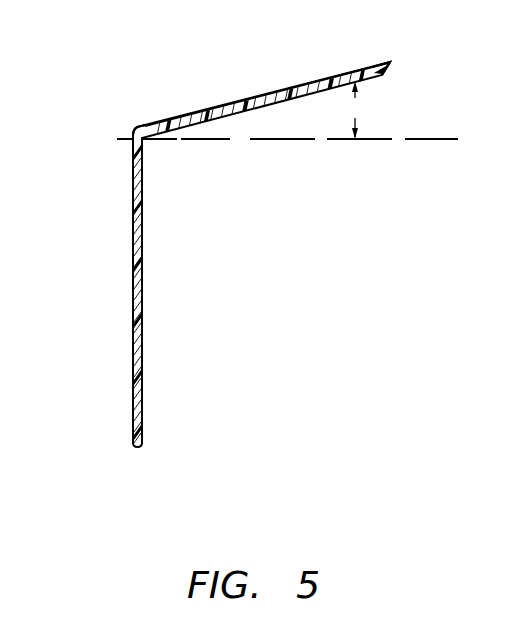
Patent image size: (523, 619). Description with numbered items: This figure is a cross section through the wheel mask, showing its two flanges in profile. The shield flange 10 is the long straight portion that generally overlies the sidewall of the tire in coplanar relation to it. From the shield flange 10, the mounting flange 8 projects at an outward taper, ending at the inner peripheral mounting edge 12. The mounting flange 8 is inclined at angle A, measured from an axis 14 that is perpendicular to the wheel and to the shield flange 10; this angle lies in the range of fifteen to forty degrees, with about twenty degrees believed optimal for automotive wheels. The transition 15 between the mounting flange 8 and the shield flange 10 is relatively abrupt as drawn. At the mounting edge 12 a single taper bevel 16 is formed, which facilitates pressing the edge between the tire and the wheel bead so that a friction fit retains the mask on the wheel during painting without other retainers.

The mounting flange 8 is at (284, 87).
The shield flange 10 is at (134, 253).
The inner peripheral mounting edge 12 is at (389, 61).
The axis 14 is at (395, 141).
The transition 15 is at (135, 130).
The single taper bevel 16 is at (389, 66).
The angle A is at (355, 110).